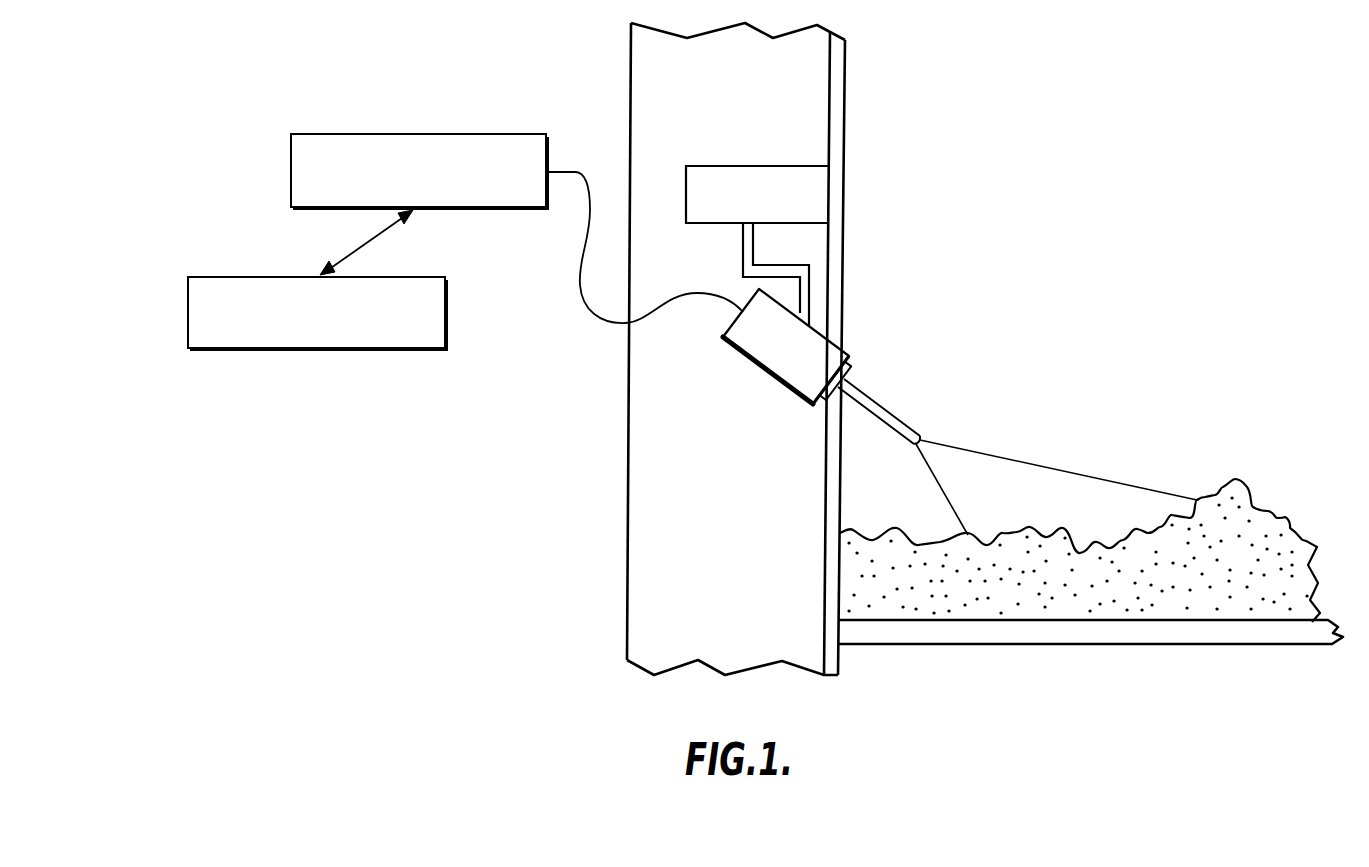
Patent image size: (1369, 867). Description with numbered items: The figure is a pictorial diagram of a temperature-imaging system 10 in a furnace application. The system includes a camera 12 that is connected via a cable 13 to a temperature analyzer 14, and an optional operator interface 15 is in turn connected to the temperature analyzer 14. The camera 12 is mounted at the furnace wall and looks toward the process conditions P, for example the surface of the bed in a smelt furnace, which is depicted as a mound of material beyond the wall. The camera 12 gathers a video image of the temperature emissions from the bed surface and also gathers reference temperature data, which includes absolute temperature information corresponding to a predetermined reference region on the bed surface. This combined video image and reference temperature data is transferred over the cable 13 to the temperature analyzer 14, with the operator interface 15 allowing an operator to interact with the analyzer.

The temperature-imaging system 10 is at (523, 468).
The camera 12 is at (757, 393).
The cable 13 is at (592, 309).
The temperature analyzer 14 is at (290, 167).
The operator interface 15 is at (188, 308).
The process conditions P is at (1080, 550).